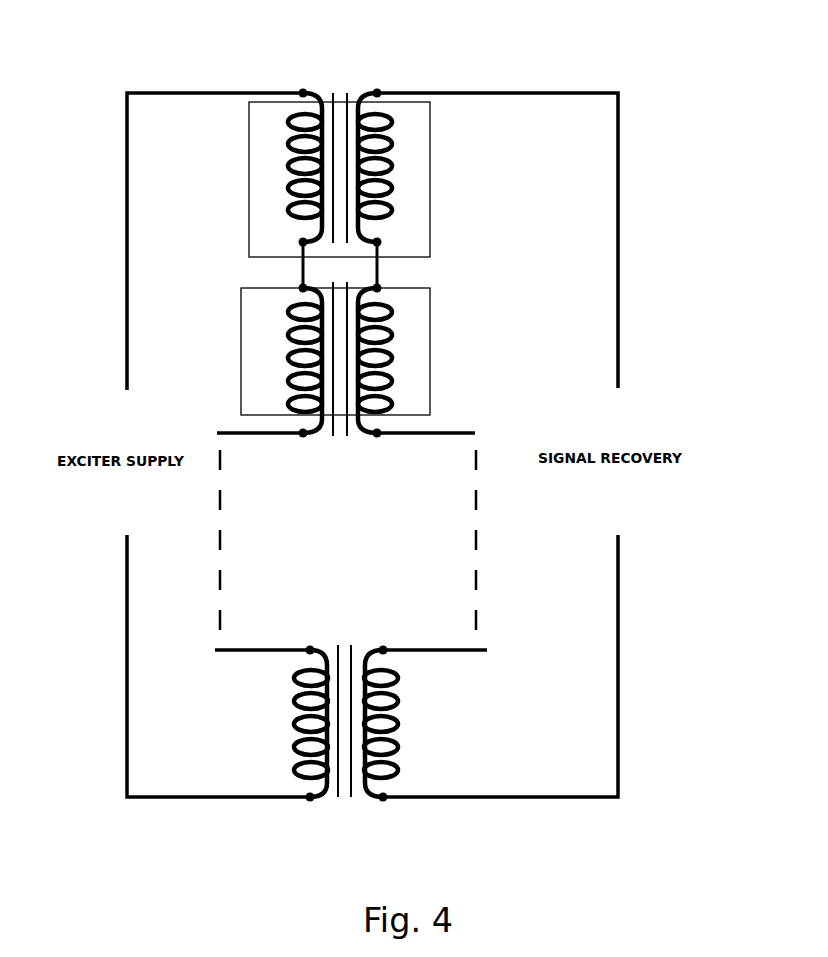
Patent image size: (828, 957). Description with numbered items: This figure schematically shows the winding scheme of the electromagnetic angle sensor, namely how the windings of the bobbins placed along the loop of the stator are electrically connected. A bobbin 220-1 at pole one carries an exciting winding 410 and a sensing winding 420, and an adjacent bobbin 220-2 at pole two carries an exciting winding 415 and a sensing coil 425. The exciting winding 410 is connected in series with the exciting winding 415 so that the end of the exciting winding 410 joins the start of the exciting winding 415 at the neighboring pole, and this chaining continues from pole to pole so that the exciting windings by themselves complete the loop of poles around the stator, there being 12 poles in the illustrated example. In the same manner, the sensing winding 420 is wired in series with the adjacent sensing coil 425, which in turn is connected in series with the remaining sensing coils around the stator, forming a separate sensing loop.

The exciting winding 410 is at (275, 135).
The sensing winding 420 is at (407, 128).
The exciting winding 415 is at (272, 332).
The sensing coil 425 is at (407, 335).
The bobbin 220-1 is at (403, 132).
The bobbin 220-2 is at (368, 360).
The poles 12 is at (346, 723).